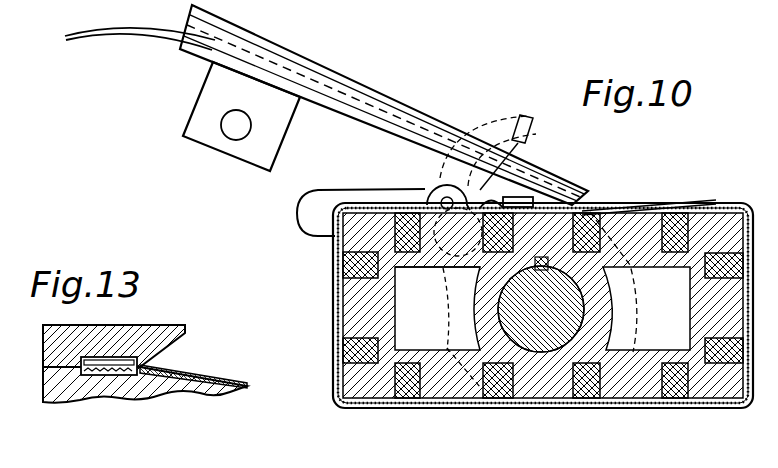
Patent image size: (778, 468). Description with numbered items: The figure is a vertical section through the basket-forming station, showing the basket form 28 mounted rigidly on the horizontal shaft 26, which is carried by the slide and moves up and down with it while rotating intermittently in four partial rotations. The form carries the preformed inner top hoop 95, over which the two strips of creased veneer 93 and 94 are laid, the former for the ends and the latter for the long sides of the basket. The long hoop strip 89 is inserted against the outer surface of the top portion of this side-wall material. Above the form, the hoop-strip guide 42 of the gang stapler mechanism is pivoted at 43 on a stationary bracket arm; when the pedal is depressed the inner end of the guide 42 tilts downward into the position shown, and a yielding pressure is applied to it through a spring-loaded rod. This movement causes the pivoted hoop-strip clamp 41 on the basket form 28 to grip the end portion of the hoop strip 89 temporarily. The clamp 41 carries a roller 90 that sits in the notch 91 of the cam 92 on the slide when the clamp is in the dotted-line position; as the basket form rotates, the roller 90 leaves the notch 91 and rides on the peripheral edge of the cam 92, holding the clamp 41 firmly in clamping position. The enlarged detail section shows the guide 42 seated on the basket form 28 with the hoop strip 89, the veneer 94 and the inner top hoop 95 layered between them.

In FIG. 10, the horizontal shaft 26 is at (567, 300).
In FIG. 10, the basket form 28 is at (539, 385).
In FIG. 13, the basket form 28 is at (43, 398).
In FIG. 10, the hoop-strip clamp 41 is at (563, 198).
In FIG. 10, the hoop-strip guide 42 is at (437, 74).
In FIG. 13, the hoop-strip guide 42 is at (188, 313).
In FIG. 10, the pivot 43 is at (234, 129).
In FIG. 10, the hoop strip 89 is at (125, 40).
In FIG. 13, the hoop strip 89 is at (97, 373).
In FIG. 10, the roller 90 is at (448, 283).
In FIG. 10, the notch 91 is at (451, 303).
In FIG. 10, the cam 92 is at (447, 346).
In FIG. 10, the strip of creased veneer 93 is at (338, 278).
In FIG. 10, the strip of creased veneer 94 is at (462, 406).
In FIG. 13, the strip of creased veneer 94 is at (200, 378).
In FIG. 10, the inner top hoop 95 is at (722, 213).
In FIG. 13, the inner top hoop 95 is at (122, 374).